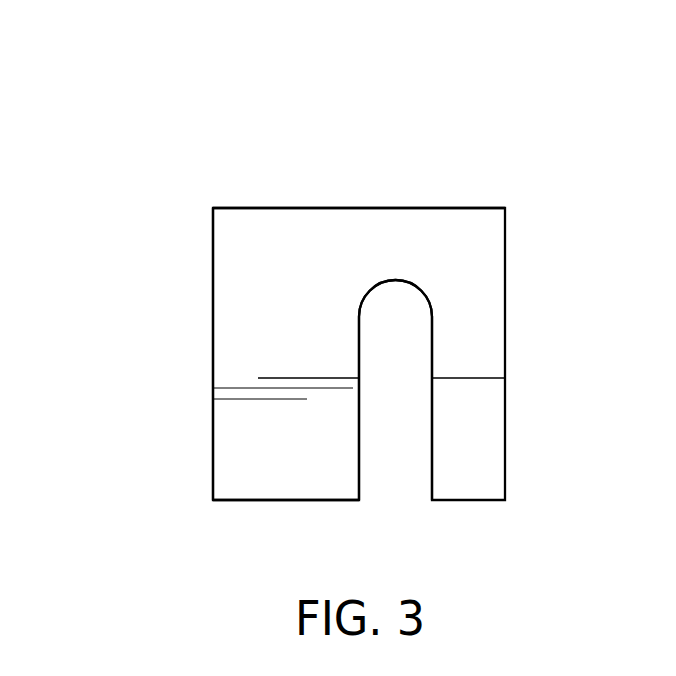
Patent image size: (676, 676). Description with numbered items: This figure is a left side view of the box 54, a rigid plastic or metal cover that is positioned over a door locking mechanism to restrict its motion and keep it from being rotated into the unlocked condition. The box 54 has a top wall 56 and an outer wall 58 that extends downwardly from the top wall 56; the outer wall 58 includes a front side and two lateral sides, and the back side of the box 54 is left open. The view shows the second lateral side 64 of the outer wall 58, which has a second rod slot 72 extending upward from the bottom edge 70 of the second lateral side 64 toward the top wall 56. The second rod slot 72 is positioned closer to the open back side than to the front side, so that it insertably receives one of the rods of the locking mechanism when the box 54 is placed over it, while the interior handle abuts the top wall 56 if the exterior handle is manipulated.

The box 54 is at (518, 205).
The top wall 56 is at (332, 208).
The outer wall 58 is at (237, 253).
The second lateral side 64 is at (237, 387).
The bottom edge 70 is at (303, 502).
The second rod slot 72 is at (393, 450).